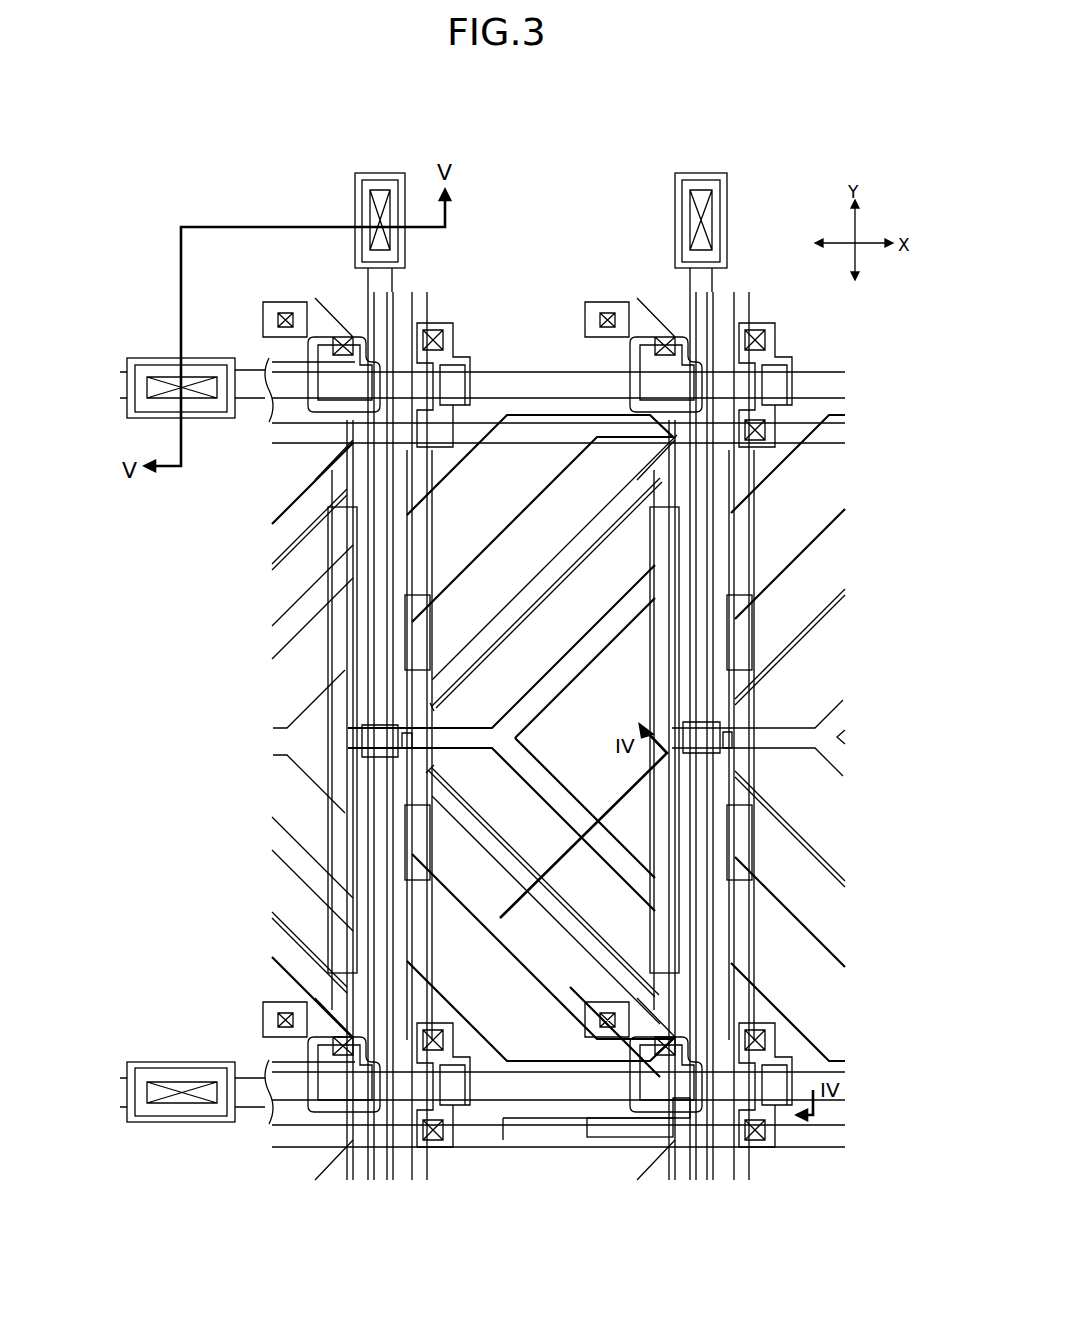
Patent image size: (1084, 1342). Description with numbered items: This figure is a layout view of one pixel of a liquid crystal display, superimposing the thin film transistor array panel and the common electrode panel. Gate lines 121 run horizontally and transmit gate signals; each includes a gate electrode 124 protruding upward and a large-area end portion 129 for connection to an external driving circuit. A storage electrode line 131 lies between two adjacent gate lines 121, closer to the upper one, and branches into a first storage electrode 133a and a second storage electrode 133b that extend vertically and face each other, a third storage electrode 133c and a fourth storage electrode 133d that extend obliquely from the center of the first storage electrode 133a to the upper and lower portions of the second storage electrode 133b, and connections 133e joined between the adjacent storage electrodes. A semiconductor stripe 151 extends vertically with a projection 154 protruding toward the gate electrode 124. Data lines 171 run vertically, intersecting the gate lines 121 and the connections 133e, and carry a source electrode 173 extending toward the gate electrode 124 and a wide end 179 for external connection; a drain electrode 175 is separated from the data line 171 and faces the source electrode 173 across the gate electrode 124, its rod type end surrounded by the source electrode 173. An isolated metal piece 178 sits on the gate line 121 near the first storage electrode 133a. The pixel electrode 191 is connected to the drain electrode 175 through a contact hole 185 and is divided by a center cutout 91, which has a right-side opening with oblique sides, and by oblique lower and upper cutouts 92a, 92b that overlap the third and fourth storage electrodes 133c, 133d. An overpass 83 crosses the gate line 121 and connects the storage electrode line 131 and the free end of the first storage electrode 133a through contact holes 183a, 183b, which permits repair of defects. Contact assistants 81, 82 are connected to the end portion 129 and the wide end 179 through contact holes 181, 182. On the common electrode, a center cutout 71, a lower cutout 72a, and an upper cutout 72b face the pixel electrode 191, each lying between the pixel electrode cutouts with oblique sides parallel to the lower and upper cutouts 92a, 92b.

The center cutout 71 is at (515, 715).
The lower cutout 72a is at (465, 913).
The upper cutout 72b is at (483, 515).
The contact assistant 81 is at (127, 376).
The contact assistant 82 is at (356, 252).
The overpass 83 is at (441, 335).
The center cutout 91 is at (750, 707).
The lower cutout 92a is at (582, 912).
The upper cutout 92b is at (483, 633).
The gate line 121 is at (595, 397).
The gate electrode 124 is at (645, 1118).
The end portion 129 is at (127, 404).
The storage electrode line 131 is at (517, 440).
The first storage electrode 133a is at (410, 557).
The second storage electrode 133b is at (757, 685).
The third storage electrode 133c is at (566, 560).
The fourth storage electrode 133d is at (490, 823).
The connection 133e is at (750, 767).
The semiconductor stripe 151 is at (693, 585).
The projection 154 is at (600, 1120).
The data line 171 is at (392, 815).
The source electrode 173 is at (682, 1105).
The drain electrode 175 is at (605, 1038).
The isolated metal piece 178 is at (432, 1087).
The wide end 179 is at (380, 176).
The contact hole 181 is at (167, 376).
The contact hole 182 is at (406, 250).
The contact hole 183a is at (433, 1148).
The contact hole 183b is at (433, 1030).
The contact hole 185 is at (588, 1020).
The pixel electrode 191 is at (530, 1067).